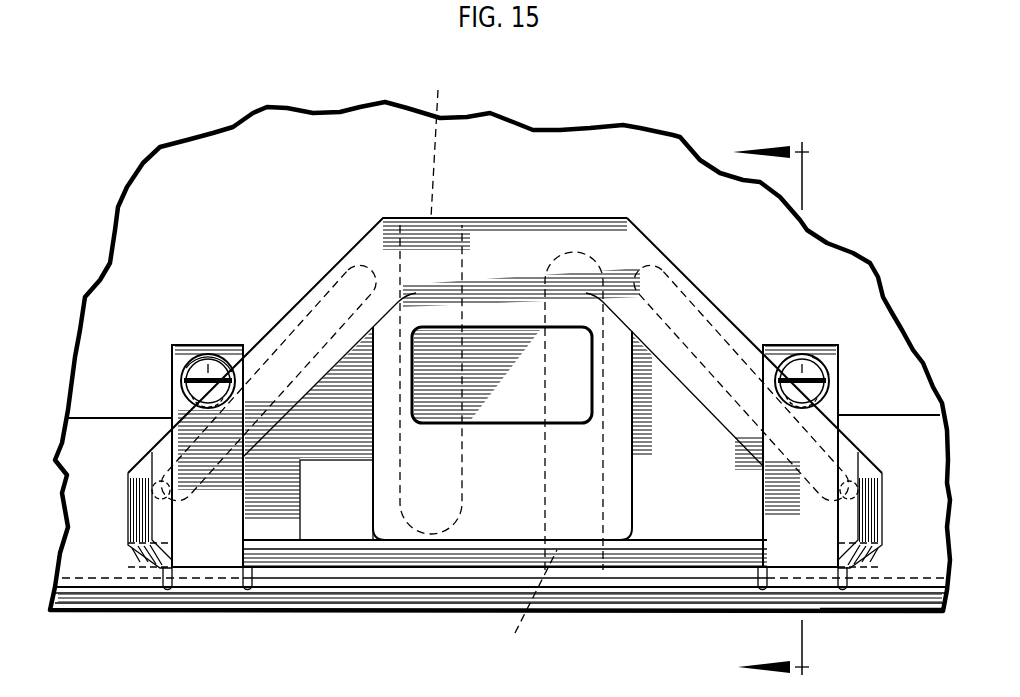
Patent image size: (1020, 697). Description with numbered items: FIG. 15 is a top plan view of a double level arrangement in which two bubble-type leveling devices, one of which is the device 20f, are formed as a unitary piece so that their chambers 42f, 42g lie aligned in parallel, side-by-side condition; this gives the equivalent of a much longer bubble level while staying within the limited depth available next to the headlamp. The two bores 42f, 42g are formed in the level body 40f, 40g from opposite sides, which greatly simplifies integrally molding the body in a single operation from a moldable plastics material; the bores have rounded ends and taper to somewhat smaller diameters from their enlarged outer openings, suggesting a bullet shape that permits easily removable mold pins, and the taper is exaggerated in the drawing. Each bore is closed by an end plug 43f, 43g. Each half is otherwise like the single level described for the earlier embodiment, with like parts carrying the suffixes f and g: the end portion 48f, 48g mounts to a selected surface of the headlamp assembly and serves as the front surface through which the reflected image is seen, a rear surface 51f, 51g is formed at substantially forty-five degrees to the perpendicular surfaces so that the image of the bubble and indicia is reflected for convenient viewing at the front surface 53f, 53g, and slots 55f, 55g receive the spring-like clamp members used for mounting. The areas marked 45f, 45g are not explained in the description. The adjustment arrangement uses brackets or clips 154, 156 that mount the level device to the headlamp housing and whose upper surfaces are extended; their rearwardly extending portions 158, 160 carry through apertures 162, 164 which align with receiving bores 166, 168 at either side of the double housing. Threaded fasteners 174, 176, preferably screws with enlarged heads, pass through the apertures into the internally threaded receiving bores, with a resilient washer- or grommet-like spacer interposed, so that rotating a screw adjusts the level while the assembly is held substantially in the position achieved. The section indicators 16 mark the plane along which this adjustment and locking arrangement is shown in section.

The leveling device 20f is at (284, 152).
The level body 40f is at (314, 274).
The level body 40g is at (656, 229).
The end plug 43f is at (437, 141).
The end plug 43g is at (524, 610).
The chamber (bore) 42f is at (458, 505).
The chamber (bore) 42g is at (545, 447).
The left panel face 45f is at (301, 484).
The right panel face 45g is at (678, 484).
The end portion 48f is at (346, 598).
The end portion 48g is at (633, 598).
The rear surface 51f is at (303, 300).
The rear surface 51g is at (705, 300).
The front surface 53f is at (298, 578).
The front surface 53g is at (723, 577).
The slot 55f is at (343, 265).
The slot 55g is at (677, 257).
The bracket (clip) 154 is at (203, 577).
The bracket (clip) 156 is at (838, 593).
The rearwardly extending portion 158 is at (175, 392).
The rearwardly extending portion 160 is at (840, 403).
The through aperture 162 is at (205, 340).
The receiving bore 166 is at (208, 383).
The through aperture 164 is at (803, 363).
The receiving bore 168 is at (802, 383).
The threaded fastener 174 is at (181, 368).
The threaded fastener 176 is at (835, 365).
The section line 16- 16 is at (786, 409).